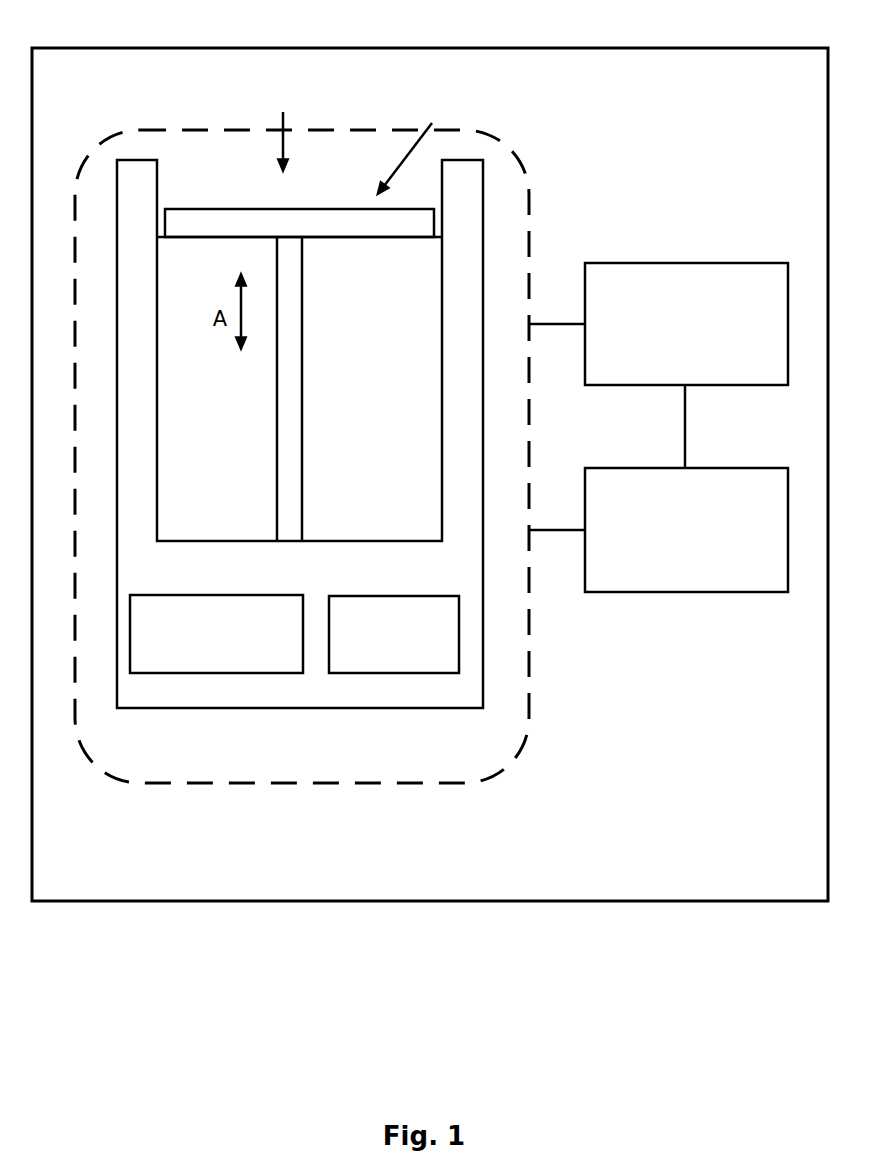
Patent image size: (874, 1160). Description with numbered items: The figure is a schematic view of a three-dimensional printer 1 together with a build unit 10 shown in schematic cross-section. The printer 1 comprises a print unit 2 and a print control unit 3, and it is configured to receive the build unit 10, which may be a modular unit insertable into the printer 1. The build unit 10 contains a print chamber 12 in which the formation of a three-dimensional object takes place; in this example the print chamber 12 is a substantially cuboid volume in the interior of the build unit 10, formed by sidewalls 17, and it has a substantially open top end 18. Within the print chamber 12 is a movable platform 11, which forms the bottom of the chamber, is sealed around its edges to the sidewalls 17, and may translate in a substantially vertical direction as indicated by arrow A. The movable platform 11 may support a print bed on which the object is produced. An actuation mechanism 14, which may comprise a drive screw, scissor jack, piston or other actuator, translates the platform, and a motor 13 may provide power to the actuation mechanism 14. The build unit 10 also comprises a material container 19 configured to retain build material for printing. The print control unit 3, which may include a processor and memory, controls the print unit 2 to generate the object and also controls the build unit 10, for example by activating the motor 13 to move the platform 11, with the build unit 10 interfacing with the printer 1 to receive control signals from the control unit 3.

The 3D printer 1 is at (117, 47).
The print unit 2 is at (710, 262).
The print control unit 3 is at (711, 467).
The build unit 10 is at (155, 128).
The movable platform 11 is at (177, 210).
The print chamber 12 is at (417, 147).
The motor 13 is at (415, 595).
The actuation mechanism 14 is at (275, 437).
The sidewalls 17 is at (152, 305).
The open top end 18 is at (283, 129).
The material container 19 is at (253, 595).